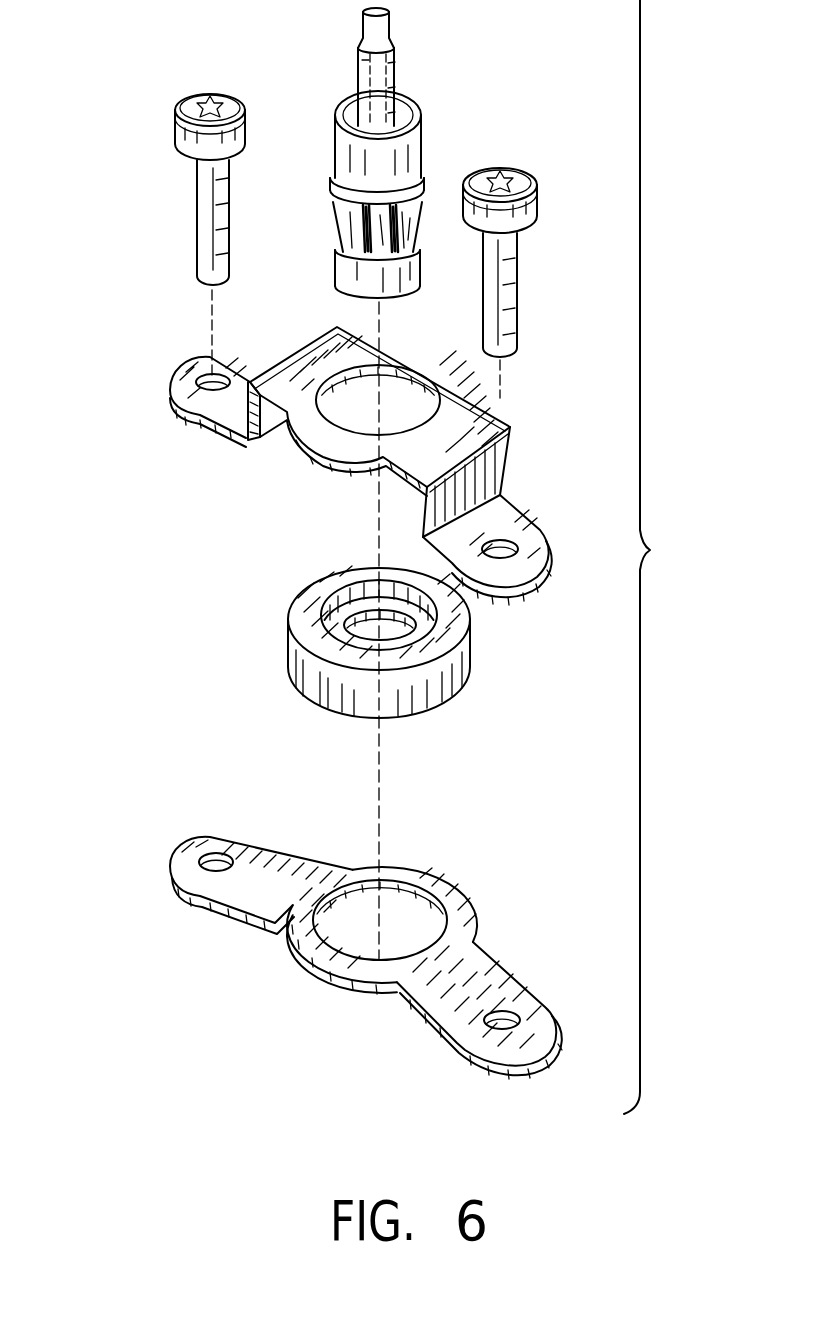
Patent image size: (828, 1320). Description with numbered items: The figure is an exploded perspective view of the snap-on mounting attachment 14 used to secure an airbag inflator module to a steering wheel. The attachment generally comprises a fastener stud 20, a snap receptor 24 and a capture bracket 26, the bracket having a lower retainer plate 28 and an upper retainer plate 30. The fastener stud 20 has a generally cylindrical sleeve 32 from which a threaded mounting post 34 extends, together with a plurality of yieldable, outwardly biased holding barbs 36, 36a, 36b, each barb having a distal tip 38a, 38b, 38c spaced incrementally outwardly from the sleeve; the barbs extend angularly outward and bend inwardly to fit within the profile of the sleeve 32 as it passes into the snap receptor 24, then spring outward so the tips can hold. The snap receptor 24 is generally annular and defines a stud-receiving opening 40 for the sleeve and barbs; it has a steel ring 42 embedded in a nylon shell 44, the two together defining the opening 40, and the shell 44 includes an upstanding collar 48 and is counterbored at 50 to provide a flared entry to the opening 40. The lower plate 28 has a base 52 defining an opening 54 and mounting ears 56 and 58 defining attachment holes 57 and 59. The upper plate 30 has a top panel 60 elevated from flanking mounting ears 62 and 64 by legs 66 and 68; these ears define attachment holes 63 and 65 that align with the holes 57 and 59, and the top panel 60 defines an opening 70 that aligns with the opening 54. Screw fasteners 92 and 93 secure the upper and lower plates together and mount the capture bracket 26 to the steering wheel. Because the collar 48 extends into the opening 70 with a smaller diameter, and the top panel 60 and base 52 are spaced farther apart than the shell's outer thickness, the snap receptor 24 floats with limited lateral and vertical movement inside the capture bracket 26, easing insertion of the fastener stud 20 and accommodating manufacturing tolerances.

The snap-on mounting attachment 14 is at (660, 550).
The fastener stud 20 is at (375, 159).
The snap receptor 24 is at (361, 630).
The capture bracket 26 is at (326, 955).
The lower retainer plate 28 is at (357, 1000).
The upper retainer plate 30 is at (346, 471).
The sleeve 32 is at (343, 137).
The threaded mounting post 34 is at (362, 81).
The holding barb 36 is at (383, 180).
The holding barb 36a is at (412, 278).
The holding barb 36b is at (412, 222).
The distal tip 38a is at (333, 187).
The distal tip 38b is at (373, 205).
The distal tip 38c is at (412, 150).
The stud-receiving opening 40 is at (357, 588).
The ring 42 is at (406, 590).
The shell 44 is at (445, 688).
The collar 48 is at (340, 643).
The counterbore 50 is at (307, 621).
The base 52 is at (402, 912).
The opening 54 is at (413, 903).
The mounting ear 56 is at (221, 868).
The attachment hole 57 is at (172, 877).
The mounting ear 58 is at (475, 1025).
The attachment hole 59 is at (501, 1030).
The top panel 60 is at (412, 357).
The mounting ear 62 is at (178, 397).
The attachment hole 63 is at (207, 390).
The mounting ear 64 is at (504, 562).
The attachment hole 65 is at (500, 558).
The leg 66 is at (278, 420).
The leg 68 is at (490, 476).
The opening 70 is at (342, 428).
The screw fastener 92 is at (176, 124).
The screw fastener 93 is at (536, 207).